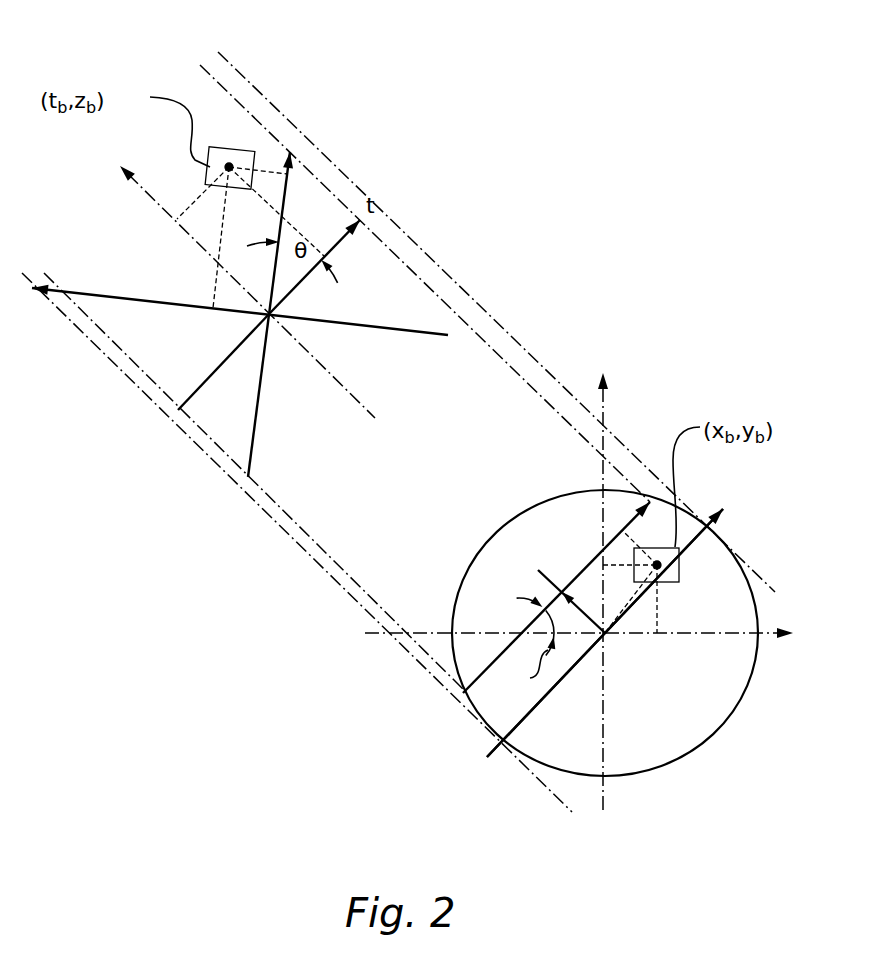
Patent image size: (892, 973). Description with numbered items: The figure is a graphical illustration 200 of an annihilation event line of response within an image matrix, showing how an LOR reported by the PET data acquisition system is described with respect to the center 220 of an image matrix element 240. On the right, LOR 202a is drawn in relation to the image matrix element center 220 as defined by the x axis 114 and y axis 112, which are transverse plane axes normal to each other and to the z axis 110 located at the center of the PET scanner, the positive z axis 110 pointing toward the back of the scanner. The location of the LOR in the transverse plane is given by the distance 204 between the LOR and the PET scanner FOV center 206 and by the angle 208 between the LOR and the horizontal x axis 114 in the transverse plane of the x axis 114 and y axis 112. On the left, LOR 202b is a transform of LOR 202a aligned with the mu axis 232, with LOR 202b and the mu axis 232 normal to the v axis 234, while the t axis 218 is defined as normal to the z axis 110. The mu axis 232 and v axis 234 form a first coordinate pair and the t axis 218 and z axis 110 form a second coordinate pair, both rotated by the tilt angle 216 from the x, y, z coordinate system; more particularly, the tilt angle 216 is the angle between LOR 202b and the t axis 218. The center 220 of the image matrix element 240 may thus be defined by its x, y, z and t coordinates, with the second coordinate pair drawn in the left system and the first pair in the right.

The coordinate system diagram 200 is at (455, 97).
The z axis 110 is at (147, 200).
The y axis 112 is at (603, 407).
The x axis 114 is at (722, 633).
The LOR 202a is at (583, 565).
The LOR 202b is at (262, 406).
The distance s 204 is at (538, 572).
The PET scanner FOV center 206 is at (608, 636).
The angle φ 208 is at (533, 621).
The angle θ 216 is at (313, 233).
The t axis 218 is at (177, 411).
The center of image matrix element 220 is at (247, 148).
The μ axis 232 is at (293, 197).
The v axis 234 is at (127, 300).
The image matrix element 240 is at (229, 165).